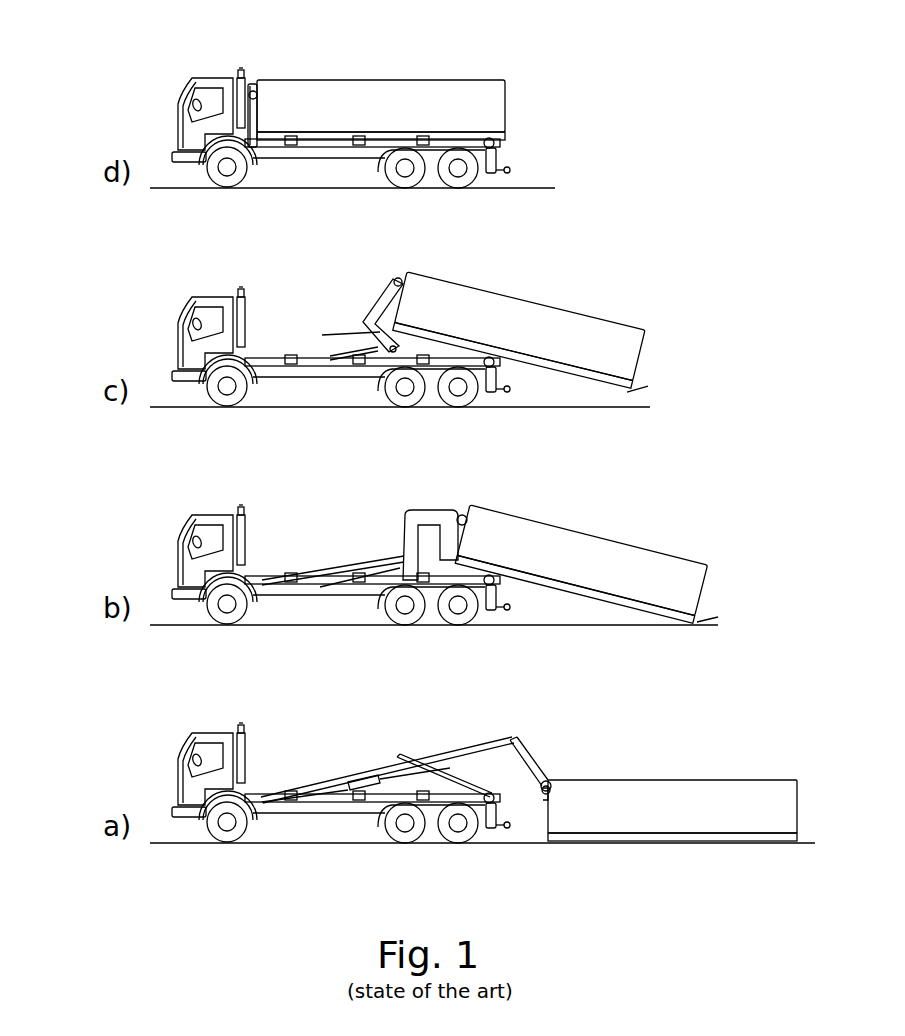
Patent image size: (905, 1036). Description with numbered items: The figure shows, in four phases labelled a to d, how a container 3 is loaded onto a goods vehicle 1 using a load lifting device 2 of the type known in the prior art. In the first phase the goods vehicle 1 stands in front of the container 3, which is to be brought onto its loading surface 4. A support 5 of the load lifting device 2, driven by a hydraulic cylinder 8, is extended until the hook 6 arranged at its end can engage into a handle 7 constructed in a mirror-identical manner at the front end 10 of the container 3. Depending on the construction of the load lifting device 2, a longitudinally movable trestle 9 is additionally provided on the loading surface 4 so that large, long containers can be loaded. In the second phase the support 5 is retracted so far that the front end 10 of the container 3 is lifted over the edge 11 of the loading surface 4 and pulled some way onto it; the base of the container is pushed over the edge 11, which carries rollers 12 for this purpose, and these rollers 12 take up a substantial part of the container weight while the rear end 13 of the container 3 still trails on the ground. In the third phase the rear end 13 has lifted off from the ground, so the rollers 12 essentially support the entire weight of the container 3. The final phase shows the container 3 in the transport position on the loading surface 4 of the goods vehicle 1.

The goods vehicle 1 is at (128, 75).
The load lifting device 2 is at (355, 283).
The container 3 is at (475, 113).
The loading surface 4 is at (292, 325).
The support 5 is at (418, 520).
The hook 6 is at (255, 93).
The handle 7 is at (545, 803).
The hydraulic cylinder 8 is at (348, 783).
The trestle 9 is at (445, 800).
The front end of the container 10 is at (455, 515).
The edge of the loading surface 11 is at (525, 760).
The rollers 12 is at (500, 146).
The rear end of the container 13 is at (656, 384).